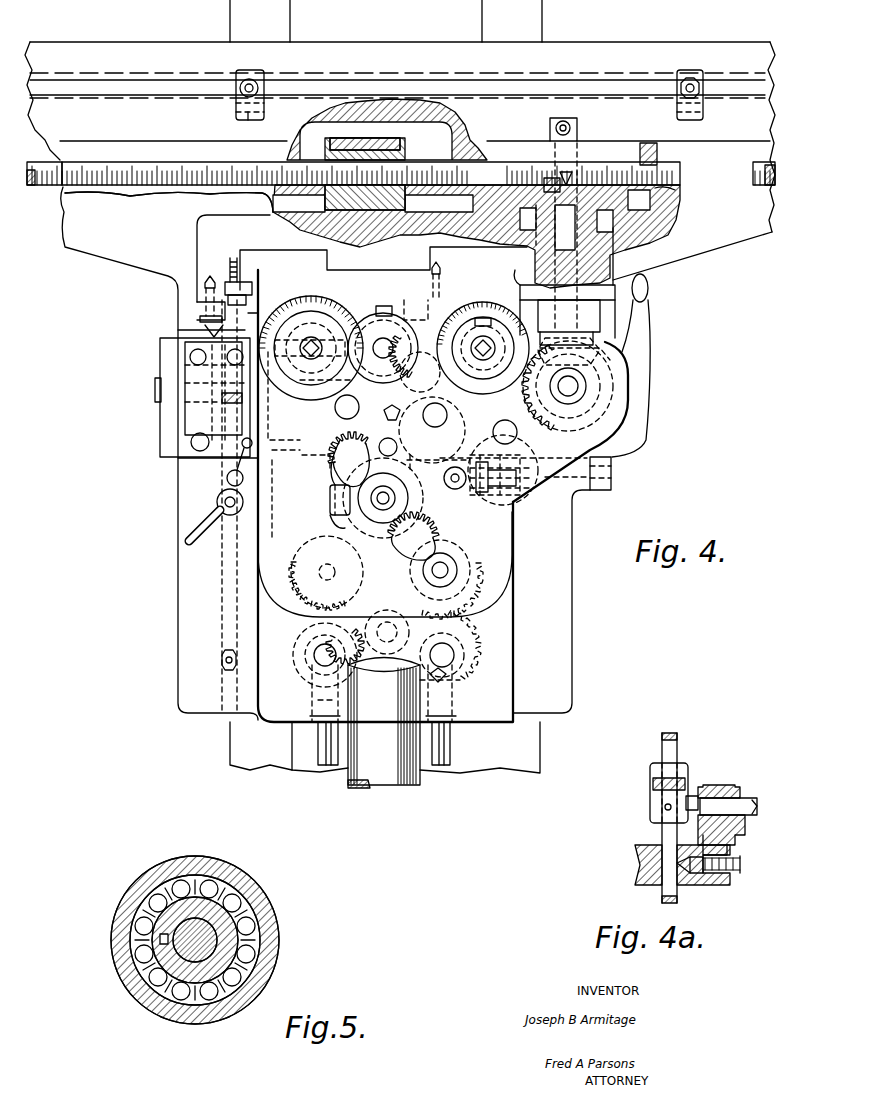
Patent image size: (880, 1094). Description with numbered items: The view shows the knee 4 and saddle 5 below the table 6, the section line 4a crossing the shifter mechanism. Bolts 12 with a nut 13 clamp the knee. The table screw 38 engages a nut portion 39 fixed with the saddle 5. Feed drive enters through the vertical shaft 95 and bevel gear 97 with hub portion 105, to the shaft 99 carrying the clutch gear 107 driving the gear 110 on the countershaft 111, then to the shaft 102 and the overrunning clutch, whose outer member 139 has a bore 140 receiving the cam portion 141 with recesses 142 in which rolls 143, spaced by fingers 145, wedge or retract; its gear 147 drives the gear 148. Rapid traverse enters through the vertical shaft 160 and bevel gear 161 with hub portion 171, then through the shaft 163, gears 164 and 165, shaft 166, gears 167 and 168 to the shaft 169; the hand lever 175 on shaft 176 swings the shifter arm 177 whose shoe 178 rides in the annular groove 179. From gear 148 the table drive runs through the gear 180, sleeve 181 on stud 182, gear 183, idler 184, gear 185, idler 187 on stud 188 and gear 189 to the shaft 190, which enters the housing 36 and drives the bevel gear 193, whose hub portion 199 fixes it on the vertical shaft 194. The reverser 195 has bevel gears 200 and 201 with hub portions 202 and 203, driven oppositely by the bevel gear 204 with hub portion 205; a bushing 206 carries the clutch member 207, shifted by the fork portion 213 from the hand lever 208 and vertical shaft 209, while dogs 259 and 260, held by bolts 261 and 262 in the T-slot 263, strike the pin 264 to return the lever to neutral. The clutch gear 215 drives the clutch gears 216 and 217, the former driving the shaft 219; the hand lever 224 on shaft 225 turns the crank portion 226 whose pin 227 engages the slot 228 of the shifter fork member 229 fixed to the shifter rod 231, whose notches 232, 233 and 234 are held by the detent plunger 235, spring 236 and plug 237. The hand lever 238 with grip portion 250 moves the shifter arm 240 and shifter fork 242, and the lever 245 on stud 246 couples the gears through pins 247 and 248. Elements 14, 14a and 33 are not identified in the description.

In FIG. 4, the knee 4 is at (262, 557).
In FIG. 4, the section line 4a— 4a is at (438, 470).
In FIG. 4, the saddle 5 is at (95, 247).
In FIG. 4, the table 6 is at (135, 55).
In FIG. 4, the bolts 12 is at (226, 480).
In FIG. 4, the nut 13 is at (216, 512).
In FIG. 4, the dial hub 14 is at (311, 338).
In FIG. 4, the shaft 14a is at (513, 467).
In FIG. 4, the dial hub 33 is at (494, 348).
In FIG. 4, the housing 36 is at (630, 294).
In FIG. 4, the table screw 38 is at (45, 187).
In FIG. 4, the nut portion 39 is at (322, 191).
In FIG. 4, the vertical shaft 95 is at (322, 740).
In FIG. 4, the bevel gear 97 is at (310, 672).
In FIG. 4, the shaft 99 is at (318, 655).
In FIG. 4, the shaft 102 is at (324, 572).
In FIG. 4, the elongated hub portion 105 is at (314, 700).
In FIG. 4, the clutch gear 107 is at (332, 640).
In FIG. 4, the gear 110 is at (384, 723).
In FIG. 4, the countershaft 111 is at (387, 632).
In FIG. 5, the outer member 139 is at (150, 882).
In FIG. 5, the cylindrical bore 140 is at (140, 900).
In FIG. 5, the cam portion 141 is at (125, 915).
In FIG. 5, the cam recesses 142 is at (140, 940).
In FIG. 5, the rolls 143 is at (145, 955).
In FIG. 5, the fingers 145 is at (140, 980).
In FIG. 4, the gear 147 is at (317, 575).
In FIG. 4, the gear 148 is at (350, 459).
In FIG. 4, the vertical shaft 160 is at (446, 745).
In FIG. 4, the bevel gear 161 is at (465, 680).
In FIG. 4, the shaft 163 is at (450, 654).
In FIG. 4, the gear 164 is at (476, 638).
In FIG. 4, the gear 165 is at (466, 591).
In FIG. 4, the shaft 166 is at (452, 570).
In FIG. 4, the gear 167 is at (413, 536).
In FIG. 4, the gear 168 is at (445, 567).
In FIG. 4, the shaft 169 is at (390, 492).
In FIG. 4, the sleeve or hub portion 171 is at (455, 700).
In FIG. 4, the hand lever 175 is at (240, 452).
In FIG. 4, the shaft 176 is at (276, 440).
In FIG. 4, the shifter arm 177 is at (332, 460).
In FIG. 4, the pivoted shoe 178 is at (340, 520).
In FIG. 4, the annular groove 179 is at (340, 527).
In FIG. 4, the gear 180 is at (366, 446).
In FIG. 4, the sleeve 181 is at (436, 410).
In FIG. 4, the stud 182 is at (342, 408).
In FIG. 4, the gear 183 is at (384, 420).
In FIG. 4, the idler 184 is at (390, 452).
In FIG. 4, the gear 185 is at (432, 430).
In FIG. 4, the idler 187 is at (515, 470).
In FIG. 4, the stud 188 is at (505, 430).
In FIG. 4, the gear 189 is at (580, 425).
In FIG. 4, the shaft 190 is at (612, 392).
In FIG. 4, the bevel gear 193 is at (600, 370).
In FIG. 4, the vertical shaft 194 is at (575, 316).
In FIG. 4, the reverser 195 is at (645, 220).
In FIG. 4, the hub portion 199 is at (610, 358).
In FIG. 4, the bevel gear 200 is at (508, 210).
In FIG. 4, the bevel gear 201 is at (640, 203).
In FIG. 4, the sleeve or hub portion 202 is at (455, 190).
In FIG. 4, the hub portion 203 is at (668, 198).
In FIG. 4, the bevel gear 204 is at (520, 240).
In FIG. 4, the hub portion 205 is at (527, 249).
In FIG. 4, the sleeve or bushing 206 is at (548, 180).
In FIG. 4, the clutch member 207 is at (576, 178).
In FIG. 4, the hand lever 208 is at (548, 128).
In FIG. 4, the vertical shaft 209 is at (572, 160).
In FIG. 4, the fork portion 213 is at (608, 260).
In FIG. 4, the clutch gear 215 is at (420, 377).
In FIG. 4, the clutch gear 216 is at (400, 376).
In FIG. 4, the clutch gear 217 is at (483, 366).
In FIG. 4, the shaft 219 is at (395, 345).
In FIG. 4, the hand lever 224 is at (650, 387).
In FIG. 4, the shaft 225 is at (600, 490).
In FIG. 4A, the shaft 225 is at (746, 800).
In FIG. 4, the crank portion 226 is at (480, 470).
In FIG. 4A, the crank portion 226 is at (732, 786).
In FIG. 4, the pin 227 is at (474, 478).
In FIG. 4A, the pin 227 is at (690, 800).
In FIG. 4A, the slot 228 is at (676, 804).
In FIG. 4, the shifter fork member 229 is at (500, 465).
In FIG. 4A, the shifter fork member 229 is at (652, 806).
In FIG. 4, the shifter rod 231 is at (458, 490).
In FIG. 4A, the shifter rod 231 is at (662, 835).
In FIG. 4A, the notch 232 is at (640, 850).
In FIG. 4A, the notch 233 is at (640, 866).
In FIG. 4A, the notch 234 is at (650, 881).
In FIG. 4A, the detent plunger 235 is at (700, 882).
In FIG. 4A, the spring 236 is at (727, 850).
In FIG. 4A, the plug 237 is at (740, 873).
In FIG. 4, the hand lever 238 is at (202, 414).
In FIG. 4, the shifter arm 240 is at (292, 316).
In FIG. 4, the shifter fork 242 is at (313, 332).
In FIG. 4, the lever 245 is at (428, 302).
In FIG. 4, the stud 246 is at (434, 290).
In FIG. 4, the pin 247 is at (383, 312).
In FIG. 4, the pin 248 is at (486, 314).
In FIG. 4, the grip portion 250 is at (230, 423).
In FIG. 4, the adjustable dog 259 is at (238, 72).
In FIG. 4, the adjustable dog 260 is at (695, 72).
In FIG. 4, the bolt 261 is at (258, 82).
In FIG. 4, the bolt 262 is at (702, 80).
In FIG. 4, the T-slot 263 is at (350, 90).
In FIG. 4, the pin 264 is at (560, 118).